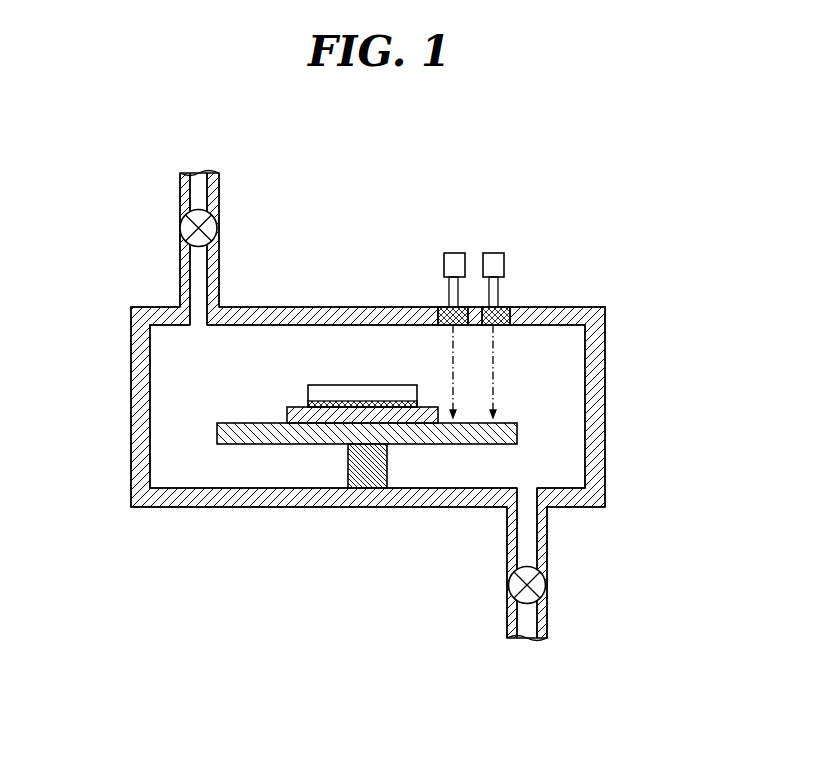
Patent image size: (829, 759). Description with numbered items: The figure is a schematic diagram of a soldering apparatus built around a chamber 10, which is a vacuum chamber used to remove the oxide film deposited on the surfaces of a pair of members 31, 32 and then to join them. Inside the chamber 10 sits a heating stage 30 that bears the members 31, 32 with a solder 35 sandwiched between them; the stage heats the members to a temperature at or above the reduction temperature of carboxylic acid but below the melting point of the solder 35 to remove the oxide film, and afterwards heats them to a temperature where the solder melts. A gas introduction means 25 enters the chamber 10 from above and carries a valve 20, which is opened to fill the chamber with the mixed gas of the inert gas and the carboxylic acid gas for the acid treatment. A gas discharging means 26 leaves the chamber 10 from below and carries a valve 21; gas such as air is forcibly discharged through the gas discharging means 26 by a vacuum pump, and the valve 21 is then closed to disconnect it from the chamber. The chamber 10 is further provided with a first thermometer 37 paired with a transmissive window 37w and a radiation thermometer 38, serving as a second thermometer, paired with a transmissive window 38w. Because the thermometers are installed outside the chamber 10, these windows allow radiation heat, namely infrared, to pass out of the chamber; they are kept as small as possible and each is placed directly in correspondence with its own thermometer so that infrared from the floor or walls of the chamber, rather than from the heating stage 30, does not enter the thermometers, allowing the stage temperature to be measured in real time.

The chamber 10 is at (605, 398).
The valve 20 is at (180, 228).
The valve 21 is at (547, 580).
The gas introduction means 25 is at (180, 272).
The gas discharging means 26 is at (547, 550).
The heating stage 30 is at (217, 430).
The member 31 is at (287, 412).
The member 32 is at (308, 390).
The solder 35 is at (308, 404).
The first thermometer 37 is at (445, 253).
The transmissive window 37w is at (445, 305).
The radiation thermometer 38 is at (503, 253).
The transmissive window 38w is at (503, 307).